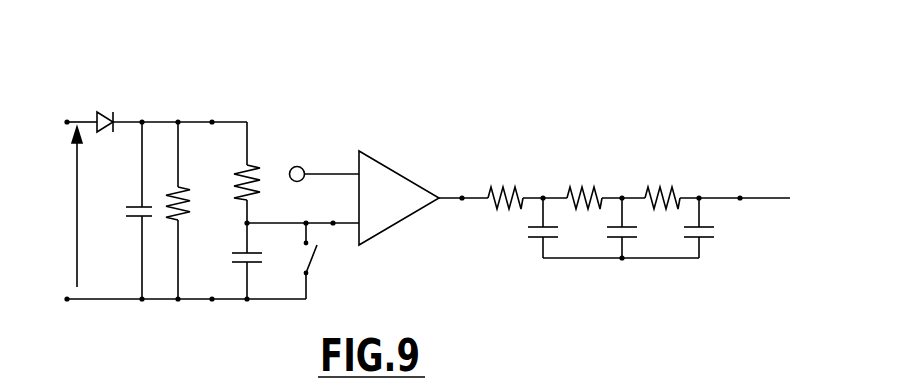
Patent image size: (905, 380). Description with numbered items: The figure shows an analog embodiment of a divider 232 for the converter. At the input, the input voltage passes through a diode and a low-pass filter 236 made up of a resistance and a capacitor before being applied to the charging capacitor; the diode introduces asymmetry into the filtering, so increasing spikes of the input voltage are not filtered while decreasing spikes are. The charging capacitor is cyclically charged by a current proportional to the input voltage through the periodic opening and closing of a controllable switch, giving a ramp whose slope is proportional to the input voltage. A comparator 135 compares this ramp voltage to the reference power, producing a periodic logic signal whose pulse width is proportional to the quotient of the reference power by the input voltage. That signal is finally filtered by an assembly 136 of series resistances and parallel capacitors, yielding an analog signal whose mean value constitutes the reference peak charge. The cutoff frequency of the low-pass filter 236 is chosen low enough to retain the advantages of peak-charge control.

The divider 232 is at (466, 106).
The low-pass filter 236 is at (146, 110).
The comparator 135 is at (375, 160).
The assembly 136 is at (710, 178).